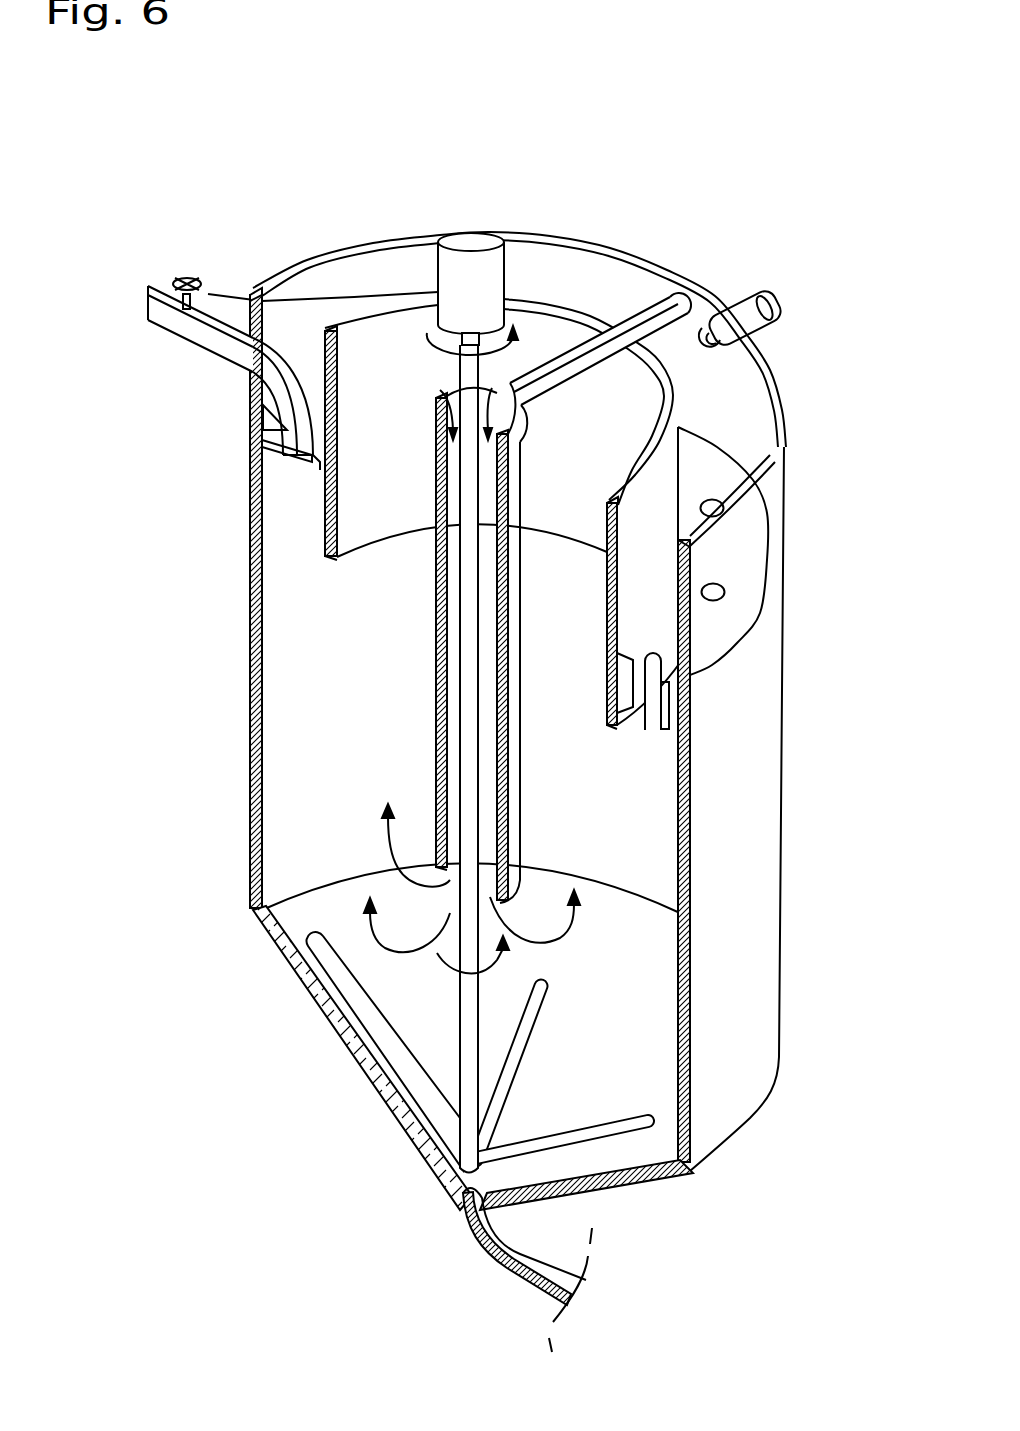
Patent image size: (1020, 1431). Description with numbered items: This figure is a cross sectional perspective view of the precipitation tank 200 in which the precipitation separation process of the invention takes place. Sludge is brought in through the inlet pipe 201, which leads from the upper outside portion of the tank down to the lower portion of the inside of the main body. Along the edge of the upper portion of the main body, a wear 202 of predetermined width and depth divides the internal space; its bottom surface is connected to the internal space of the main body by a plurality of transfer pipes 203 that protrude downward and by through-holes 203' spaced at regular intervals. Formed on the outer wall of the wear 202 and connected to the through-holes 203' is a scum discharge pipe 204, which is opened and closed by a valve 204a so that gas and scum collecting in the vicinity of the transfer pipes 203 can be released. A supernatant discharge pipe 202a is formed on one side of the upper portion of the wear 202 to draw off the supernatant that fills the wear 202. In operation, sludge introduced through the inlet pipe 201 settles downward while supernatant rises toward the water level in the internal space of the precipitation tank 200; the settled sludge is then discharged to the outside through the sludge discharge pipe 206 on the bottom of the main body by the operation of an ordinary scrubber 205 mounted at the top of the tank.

The precipitation tank 200 is at (693, 213).
The inlet pipe 201 is at (447, 572).
The wear 202 is at (665, 606).
The supernatant discharge pipe 202a is at (782, 304).
The transfer pipes 203 is at (734, 725).
The through-holes 203' is at (791, 522).
The scum discharge pipe 204 is at (237, 360).
The valve 204a is at (195, 278).
The scrubber 205 is at (470, 235).
The sludge discharge pipe 206 is at (525, 1258).